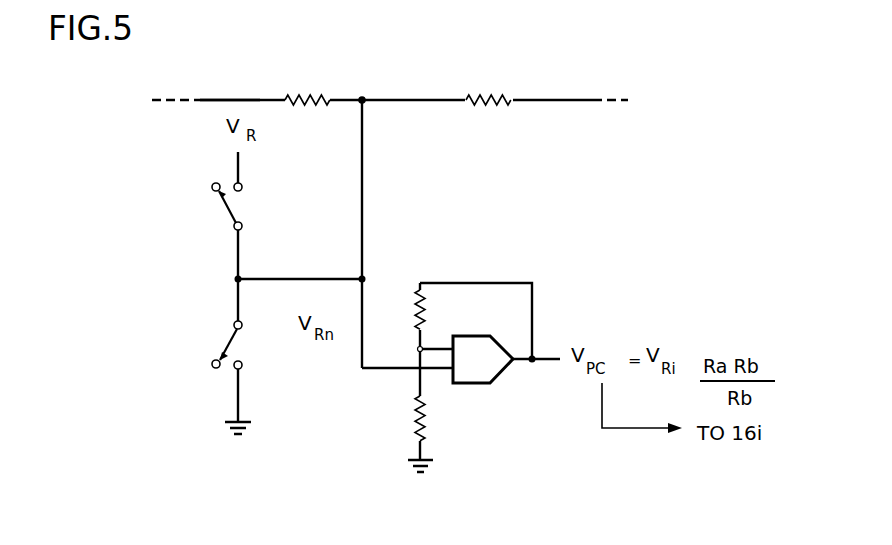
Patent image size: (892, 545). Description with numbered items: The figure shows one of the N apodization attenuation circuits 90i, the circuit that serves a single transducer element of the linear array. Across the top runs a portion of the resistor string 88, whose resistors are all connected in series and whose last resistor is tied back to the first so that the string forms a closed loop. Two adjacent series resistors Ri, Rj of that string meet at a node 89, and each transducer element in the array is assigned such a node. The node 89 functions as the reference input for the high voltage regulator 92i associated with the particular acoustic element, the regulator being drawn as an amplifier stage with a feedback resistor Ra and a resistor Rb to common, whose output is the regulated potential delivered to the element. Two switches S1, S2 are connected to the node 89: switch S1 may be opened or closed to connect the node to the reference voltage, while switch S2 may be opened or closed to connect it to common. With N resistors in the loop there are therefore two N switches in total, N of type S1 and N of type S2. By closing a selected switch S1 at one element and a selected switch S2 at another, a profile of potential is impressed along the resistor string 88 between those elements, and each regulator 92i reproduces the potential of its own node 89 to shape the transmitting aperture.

The resistor string 88 is at (235, 98).
The node 89 is at (369, 99).
The apodization attenuation circuit 90i is at (466, 325).
The high voltage regulator 92i is at (480, 384).
The resistor Ri is at (309, 97).
The resistor Rj is at (495, 97).
The feedback resistor Ra is at (418, 326).
The input resistor Rb is at (418, 420).
The switch S1 is at (198, 206).
The switch S2 is at (198, 345).